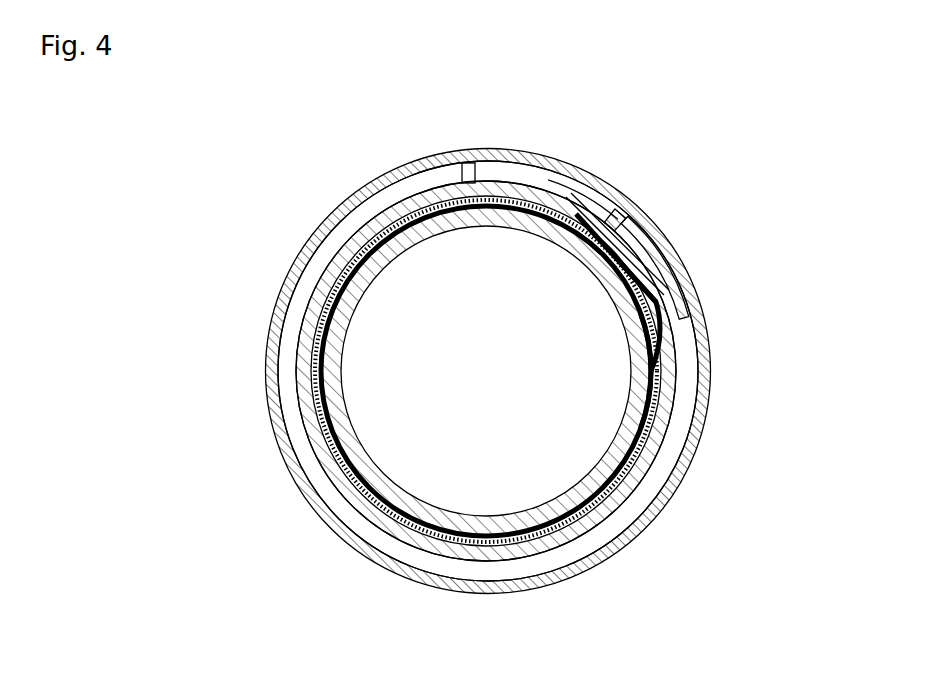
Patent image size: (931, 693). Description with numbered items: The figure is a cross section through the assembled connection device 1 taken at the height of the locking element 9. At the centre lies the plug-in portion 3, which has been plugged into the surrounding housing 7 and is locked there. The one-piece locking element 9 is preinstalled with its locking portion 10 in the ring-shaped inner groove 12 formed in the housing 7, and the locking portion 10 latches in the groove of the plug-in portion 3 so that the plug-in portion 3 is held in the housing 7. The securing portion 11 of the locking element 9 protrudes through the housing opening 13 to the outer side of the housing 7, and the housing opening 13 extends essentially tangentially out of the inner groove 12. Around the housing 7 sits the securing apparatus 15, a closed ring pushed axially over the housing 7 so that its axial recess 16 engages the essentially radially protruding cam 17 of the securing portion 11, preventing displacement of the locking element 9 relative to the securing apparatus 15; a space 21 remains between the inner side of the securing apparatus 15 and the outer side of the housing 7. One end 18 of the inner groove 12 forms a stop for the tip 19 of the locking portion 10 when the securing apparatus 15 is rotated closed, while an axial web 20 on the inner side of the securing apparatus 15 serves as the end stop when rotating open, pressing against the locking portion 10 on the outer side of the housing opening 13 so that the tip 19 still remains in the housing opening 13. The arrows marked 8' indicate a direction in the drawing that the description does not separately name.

The connection device 1 is at (178, 192).
The plug-in portion 3 is at (586, 244).
The housing 7 is at (298, 382).
The outer surface 8' is at (466, 324).
The locking element 9 is at (649, 376).
The locking portion 10 is at (322, 317).
The securing portion 11 is at (660, 262).
The inner groove 12 is at (657, 426).
The housing opening 13 is at (673, 306).
The securing apparatus 15 is at (326, 228).
The axial recess 16 is at (641, 215).
The cam 17 is at (655, 233).
The end of the inner groove 18 is at (645, 305).
The tip of the locking portion 19 is at (632, 293).
The axial web 20 is at (463, 167).
The space 21 is at (288, 432).